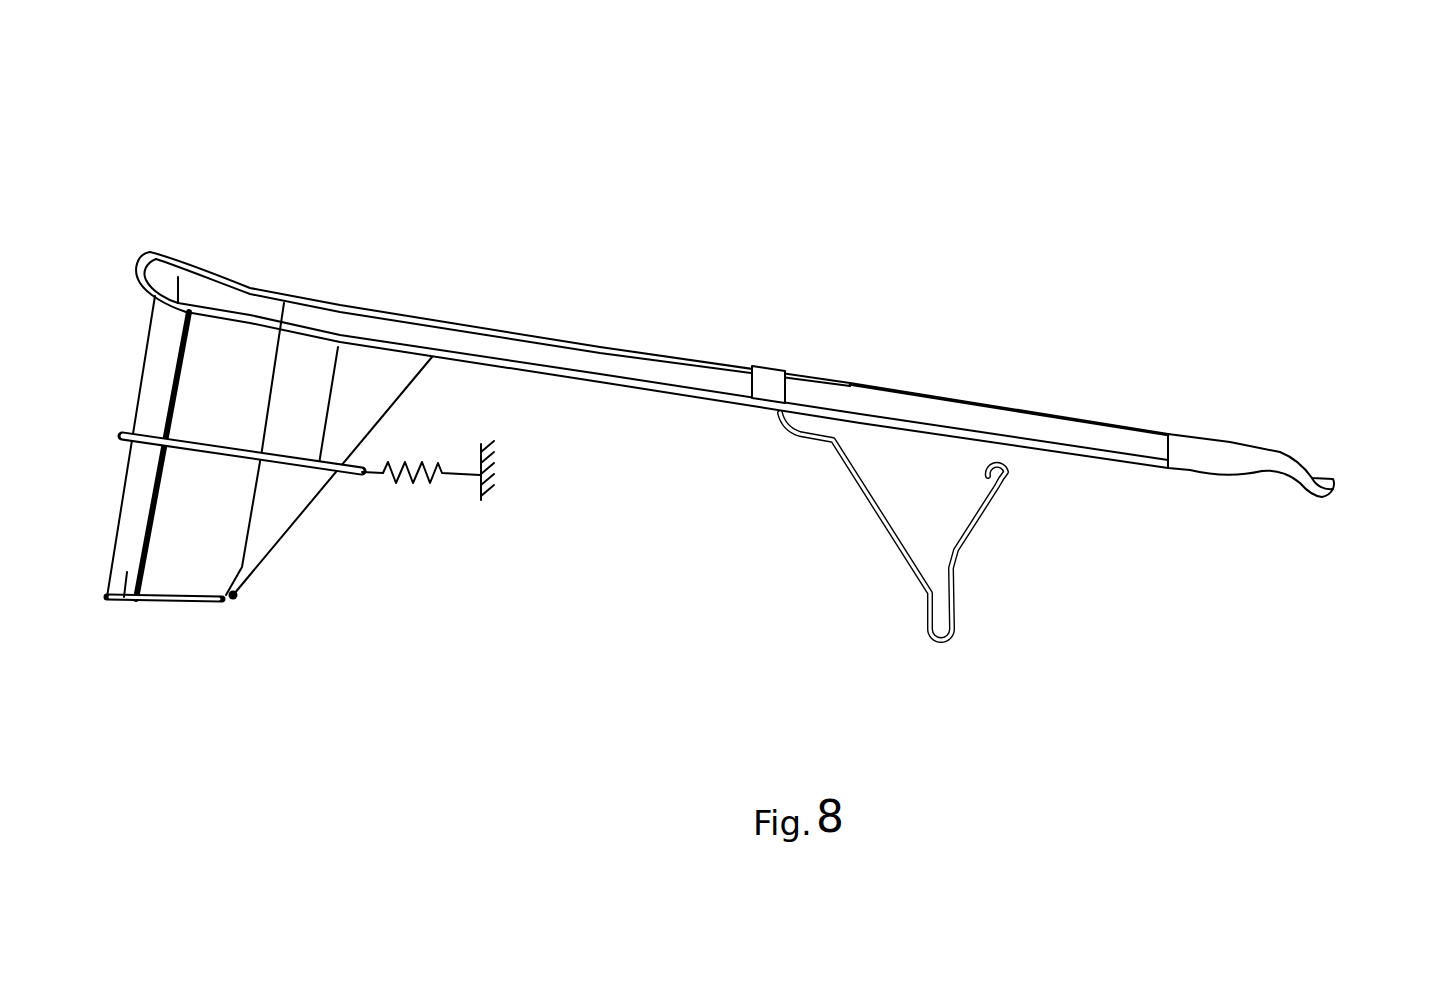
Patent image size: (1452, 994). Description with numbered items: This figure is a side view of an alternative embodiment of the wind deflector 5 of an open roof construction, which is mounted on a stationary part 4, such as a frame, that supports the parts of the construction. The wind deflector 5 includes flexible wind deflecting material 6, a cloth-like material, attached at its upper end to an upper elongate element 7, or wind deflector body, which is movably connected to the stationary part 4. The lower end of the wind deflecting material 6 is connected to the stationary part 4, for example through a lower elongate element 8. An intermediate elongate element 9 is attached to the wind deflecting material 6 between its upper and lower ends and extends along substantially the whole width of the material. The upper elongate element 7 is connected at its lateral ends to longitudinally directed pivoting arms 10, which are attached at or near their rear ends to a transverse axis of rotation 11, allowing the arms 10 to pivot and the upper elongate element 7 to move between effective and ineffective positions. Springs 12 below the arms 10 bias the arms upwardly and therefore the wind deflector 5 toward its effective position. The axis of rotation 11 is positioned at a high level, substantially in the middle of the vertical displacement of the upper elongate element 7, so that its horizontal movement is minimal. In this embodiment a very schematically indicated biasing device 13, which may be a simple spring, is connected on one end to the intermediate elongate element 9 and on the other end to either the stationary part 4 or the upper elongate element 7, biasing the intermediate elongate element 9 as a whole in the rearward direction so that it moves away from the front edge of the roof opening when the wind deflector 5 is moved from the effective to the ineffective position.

The stationary part 4 is at (487, 494).
The wind deflector 5 is at (404, 242).
The wind deflecting material 6 is at (180, 572).
The upper elongate element 7 is at (152, 262).
The lower elongate element 8 is at (233, 601).
The intermediate elongate element 9 is at (220, 448).
The pivoting arms 10 is at (645, 362).
The axis of rotation 11 is at (1343, 460).
The springs 12 is at (967, 543).
The biasing device 13 is at (437, 462).